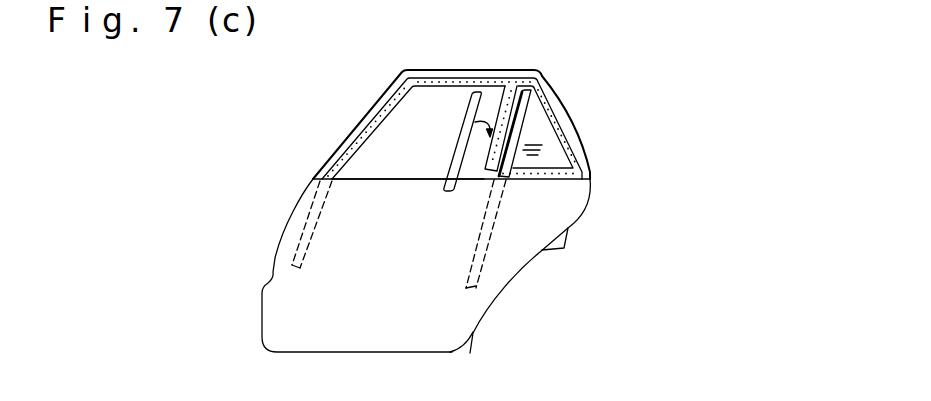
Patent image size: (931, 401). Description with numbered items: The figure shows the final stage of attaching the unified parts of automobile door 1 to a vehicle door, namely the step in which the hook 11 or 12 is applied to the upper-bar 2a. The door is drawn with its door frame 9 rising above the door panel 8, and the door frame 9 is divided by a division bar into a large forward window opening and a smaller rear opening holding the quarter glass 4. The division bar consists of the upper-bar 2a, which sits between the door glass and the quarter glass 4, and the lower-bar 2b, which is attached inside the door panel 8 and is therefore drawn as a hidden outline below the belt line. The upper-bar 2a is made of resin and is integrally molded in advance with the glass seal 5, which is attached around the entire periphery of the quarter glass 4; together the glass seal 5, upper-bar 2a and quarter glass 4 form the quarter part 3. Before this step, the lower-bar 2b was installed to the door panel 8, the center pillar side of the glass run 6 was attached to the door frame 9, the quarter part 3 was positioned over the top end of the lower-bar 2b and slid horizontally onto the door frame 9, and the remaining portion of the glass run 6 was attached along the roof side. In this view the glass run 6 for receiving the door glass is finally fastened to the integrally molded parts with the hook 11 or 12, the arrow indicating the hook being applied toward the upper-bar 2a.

The unified parts of automobile door 1 is at (450, 92).
The upper-bar 2a is at (505, 180).
The lower-bar 2b is at (480, 265).
The quarter part 3 is at (571, 105).
The quarter glass 4 is at (552, 145).
The glass seal 5 is at (538, 84).
The glass run 6 is at (373, 110).
The door panel 8 is at (283, 320).
The door frame 9 is at (417, 69).
The hook 11 is at (473, 94).
The hook 12 is at (473, 94).